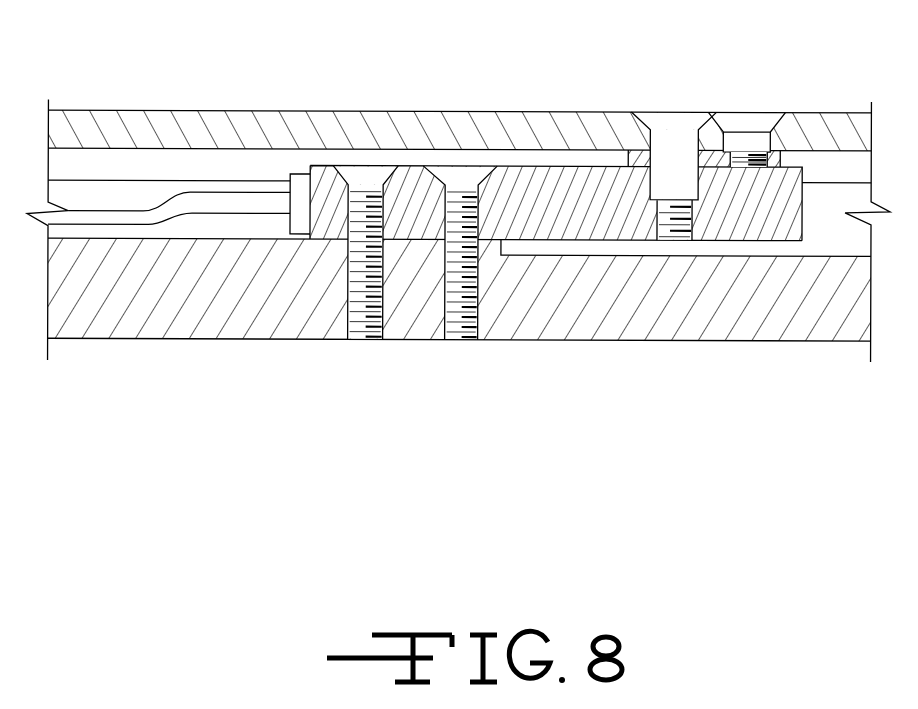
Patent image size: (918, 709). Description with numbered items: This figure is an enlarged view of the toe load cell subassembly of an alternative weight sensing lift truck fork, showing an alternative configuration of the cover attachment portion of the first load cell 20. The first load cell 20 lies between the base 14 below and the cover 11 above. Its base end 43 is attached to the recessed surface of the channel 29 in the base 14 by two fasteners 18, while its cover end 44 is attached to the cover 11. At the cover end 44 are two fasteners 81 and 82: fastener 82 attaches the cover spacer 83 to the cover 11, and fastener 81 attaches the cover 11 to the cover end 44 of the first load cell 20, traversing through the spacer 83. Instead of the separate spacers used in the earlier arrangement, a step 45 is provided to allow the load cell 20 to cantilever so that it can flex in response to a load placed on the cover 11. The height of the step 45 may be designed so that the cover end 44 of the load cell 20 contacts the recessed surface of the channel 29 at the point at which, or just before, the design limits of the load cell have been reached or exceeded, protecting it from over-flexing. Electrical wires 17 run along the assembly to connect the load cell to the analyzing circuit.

The cover 11 is at (95, 129).
The electrical wires 17 is at (212, 201).
The base end 43 is at (309, 201).
The fasteners 18 is at (362, 176).
The first load cell 20 is at (567, 193).
The fastener 81 is at (678, 118).
The fastener 82 is at (748, 118).
The cover spacer 83 is at (783, 156).
The channel 29 is at (213, 240).
The step 45 is at (327, 264).
The base 14 is at (657, 311).
The cover end 44 is at (801, 213).